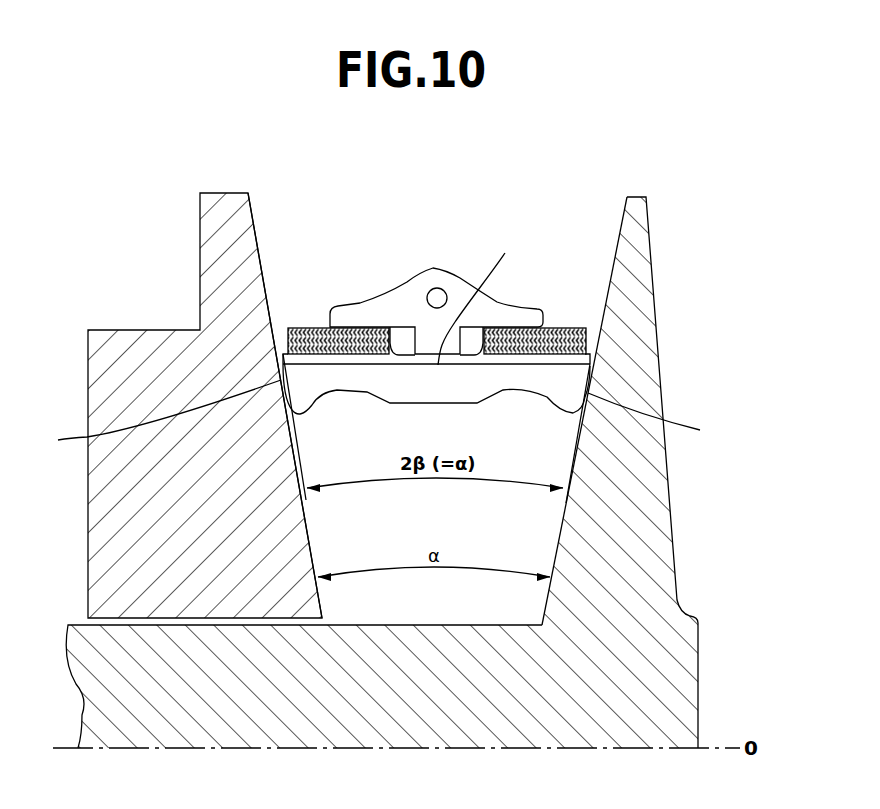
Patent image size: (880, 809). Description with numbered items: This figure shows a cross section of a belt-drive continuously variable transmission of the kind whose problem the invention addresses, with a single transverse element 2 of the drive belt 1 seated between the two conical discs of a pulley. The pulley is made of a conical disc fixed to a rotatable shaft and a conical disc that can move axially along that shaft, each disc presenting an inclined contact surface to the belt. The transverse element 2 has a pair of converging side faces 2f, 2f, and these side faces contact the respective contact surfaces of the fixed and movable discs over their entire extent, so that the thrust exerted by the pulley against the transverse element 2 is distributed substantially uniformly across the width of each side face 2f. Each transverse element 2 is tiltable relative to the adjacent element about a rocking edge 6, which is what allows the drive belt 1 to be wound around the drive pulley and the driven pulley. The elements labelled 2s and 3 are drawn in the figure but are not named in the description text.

The drive belt 1 is at (379, 319).
The transverse element 2 is at (394, 282).
The rotor side surface 2s is at (320, 357).
The side face 2f is at (379, 416).
The seal member 3 is at (312, 330).
The rocking edge 6 is at (475, 298).